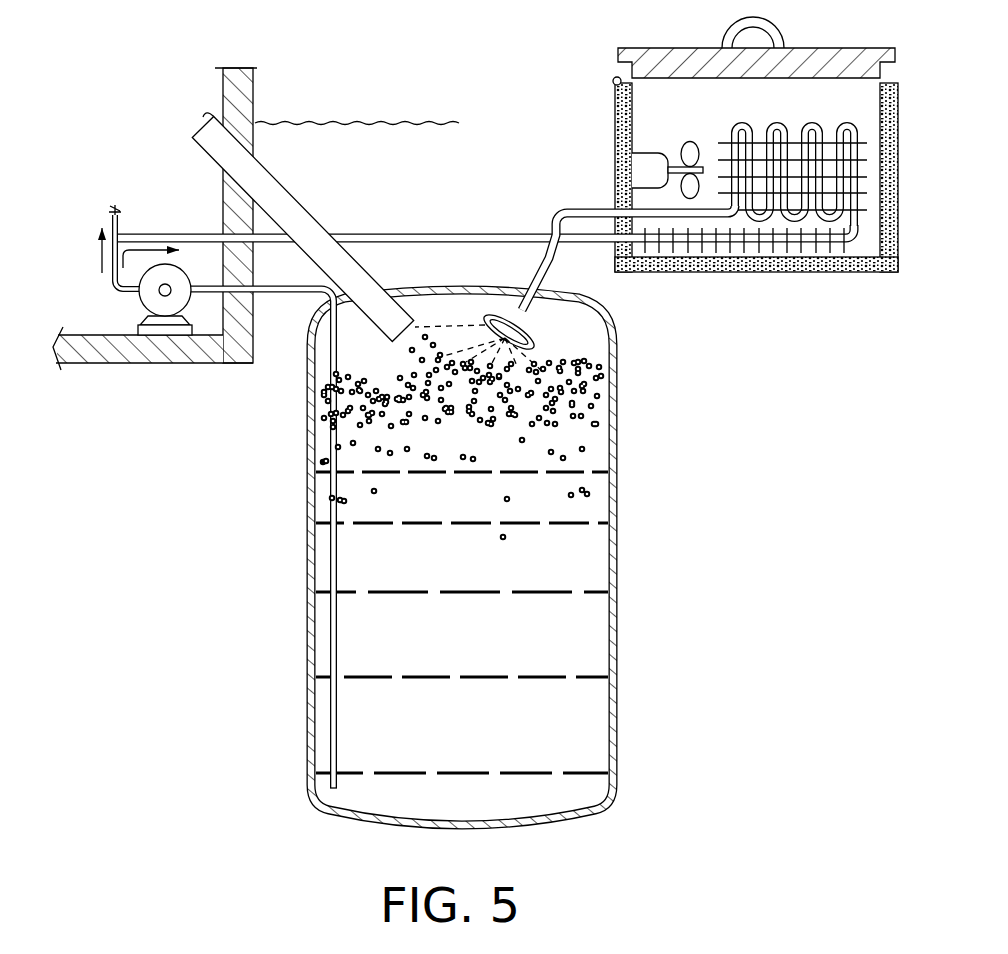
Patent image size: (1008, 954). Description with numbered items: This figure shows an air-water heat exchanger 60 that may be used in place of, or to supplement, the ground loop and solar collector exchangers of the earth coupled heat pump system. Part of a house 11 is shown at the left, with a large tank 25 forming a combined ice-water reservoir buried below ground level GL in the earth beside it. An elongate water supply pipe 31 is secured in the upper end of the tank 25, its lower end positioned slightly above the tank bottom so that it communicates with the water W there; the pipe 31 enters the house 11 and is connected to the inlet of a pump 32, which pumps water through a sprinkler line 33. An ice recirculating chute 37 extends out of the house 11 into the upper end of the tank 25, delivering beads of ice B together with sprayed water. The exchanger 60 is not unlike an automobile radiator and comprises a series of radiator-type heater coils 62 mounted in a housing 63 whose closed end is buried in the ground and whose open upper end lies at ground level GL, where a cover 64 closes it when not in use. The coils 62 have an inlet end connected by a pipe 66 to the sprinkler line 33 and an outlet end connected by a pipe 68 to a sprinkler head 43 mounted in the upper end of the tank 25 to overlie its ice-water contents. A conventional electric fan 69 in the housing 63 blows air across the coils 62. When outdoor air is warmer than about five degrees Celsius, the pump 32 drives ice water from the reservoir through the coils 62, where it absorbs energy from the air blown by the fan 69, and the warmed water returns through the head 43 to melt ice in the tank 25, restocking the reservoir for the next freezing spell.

The house 11 is at (258, 101).
The tank 25 is at (307, 645).
The water supply pipe 31 is at (318, 368).
The pump 32 is at (147, 300).
The sprinkler line 33 is at (108, 213).
The ice recirculating chute 37 is at (306, 211).
The sprinkler head 43 is at (527, 332).
The air-water heat exchanger 60 is at (603, 76).
The radiator-type heater coils 62 is at (737, 122).
The housing 63 is at (613, 88).
The cover 64 is at (808, 50).
The pipe 66 is at (492, 232).
The pipe 68 is at (553, 278).
The electric fan 69 is at (662, 157).
The beads of ice B is at (400, 349).
The ground level GL is at (407, 122).
The water W is at (518, 598).